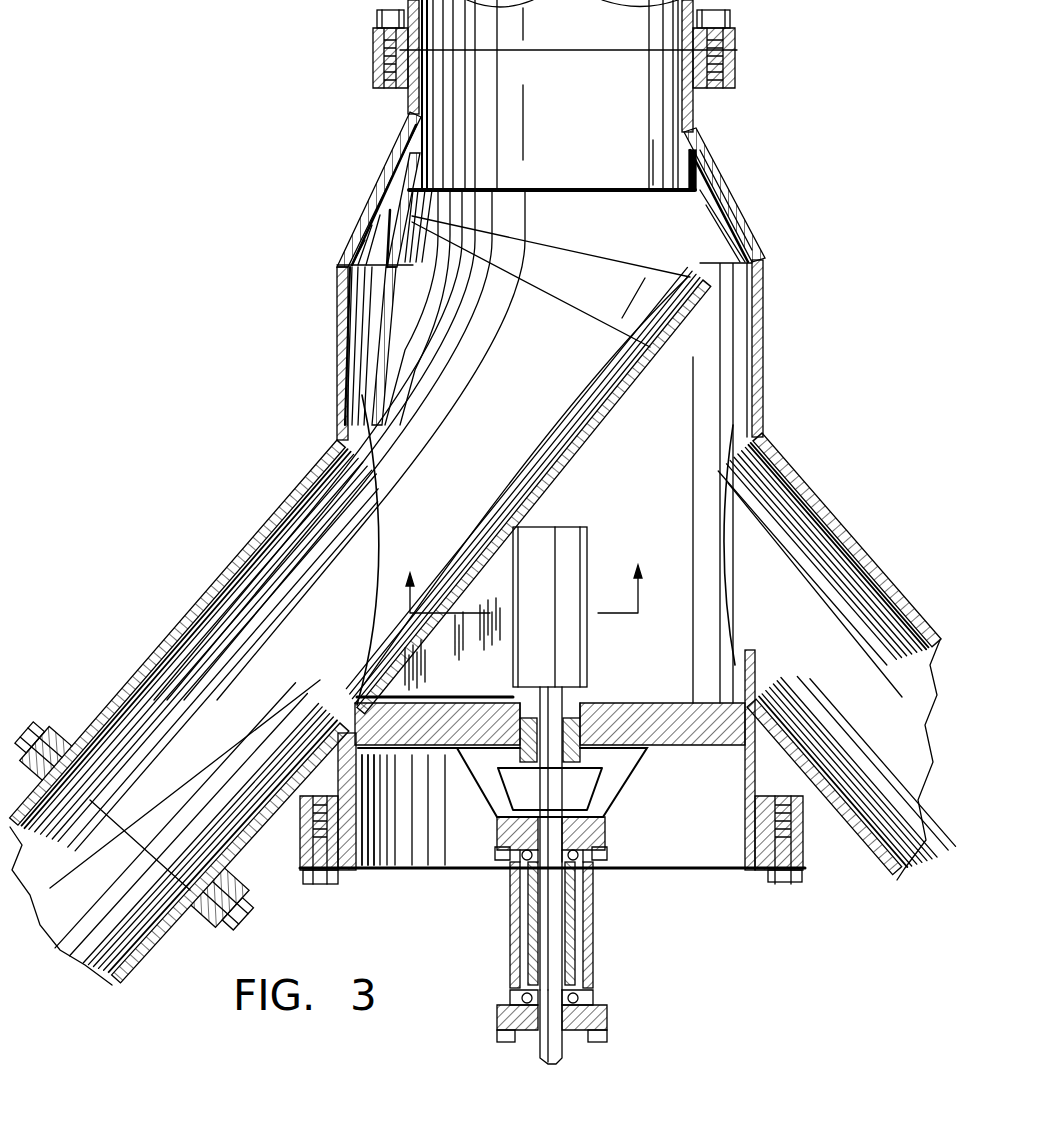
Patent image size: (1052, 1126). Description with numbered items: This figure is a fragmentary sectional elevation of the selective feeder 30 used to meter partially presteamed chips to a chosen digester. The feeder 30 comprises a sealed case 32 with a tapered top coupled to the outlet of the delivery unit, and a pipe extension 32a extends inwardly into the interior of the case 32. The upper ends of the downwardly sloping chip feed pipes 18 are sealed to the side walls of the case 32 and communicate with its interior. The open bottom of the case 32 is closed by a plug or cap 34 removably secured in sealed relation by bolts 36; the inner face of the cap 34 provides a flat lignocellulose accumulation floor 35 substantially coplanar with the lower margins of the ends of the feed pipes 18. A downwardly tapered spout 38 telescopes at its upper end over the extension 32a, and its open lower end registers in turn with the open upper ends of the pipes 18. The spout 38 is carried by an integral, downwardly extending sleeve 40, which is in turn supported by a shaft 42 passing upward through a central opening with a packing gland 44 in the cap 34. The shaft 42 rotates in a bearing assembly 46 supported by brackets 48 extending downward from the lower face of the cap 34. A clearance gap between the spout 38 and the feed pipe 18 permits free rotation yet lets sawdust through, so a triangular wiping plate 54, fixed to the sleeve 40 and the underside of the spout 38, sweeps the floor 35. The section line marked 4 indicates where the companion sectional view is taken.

The chip feed pipes 18 is at (158, 656).
The selective feeder 30 is at (778, 334).
The sealed case 32 is at (342, 290).
The pipe extension 32a is at (695, 170).
The plug or cap 34 is at (684, 738).
The lignocellulose accumulation floor 35 is at (659, 718).
The bolts 36 is at (318, 882).
The downwardly tapered spout 38 is at (375, 389).
The sleeve 40 is at (572, 568).
The shaft 42 is at (540, 1049).
The packing gland 44 is at (574, 714).
The bearing assembly 46 is at (512, 948).
The brackets 48 is at (611, 814).
The wiping plate 54 is at (488, 678).
The section line 4- 4 is at (525, 589).